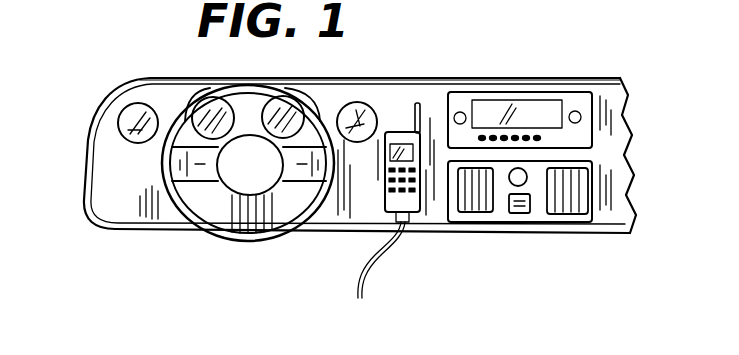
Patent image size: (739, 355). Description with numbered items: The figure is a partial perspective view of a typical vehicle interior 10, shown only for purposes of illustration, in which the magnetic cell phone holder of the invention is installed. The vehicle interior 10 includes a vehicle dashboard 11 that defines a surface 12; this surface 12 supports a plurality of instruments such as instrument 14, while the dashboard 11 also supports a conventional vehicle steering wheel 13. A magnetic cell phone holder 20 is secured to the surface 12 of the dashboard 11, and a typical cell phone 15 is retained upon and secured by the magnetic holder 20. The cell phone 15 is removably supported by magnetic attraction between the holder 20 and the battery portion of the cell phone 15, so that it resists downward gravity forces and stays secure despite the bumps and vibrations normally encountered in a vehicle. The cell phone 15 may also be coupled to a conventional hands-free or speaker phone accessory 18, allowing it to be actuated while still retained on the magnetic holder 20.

The vehicle interior 10 is at (519, 72).
The vehicle dashboard 11 is at (395, 78).
The surface 12 is at (440, 225).
The vehicle steering wheel 13 is at (238, 242).
The instrument 14 is at (127, 143).
The cell phone 15 is at (385, 184).
The accessory 18 is at (406, 226).
The magnetic cell phone holder 20 is at (374, 195).